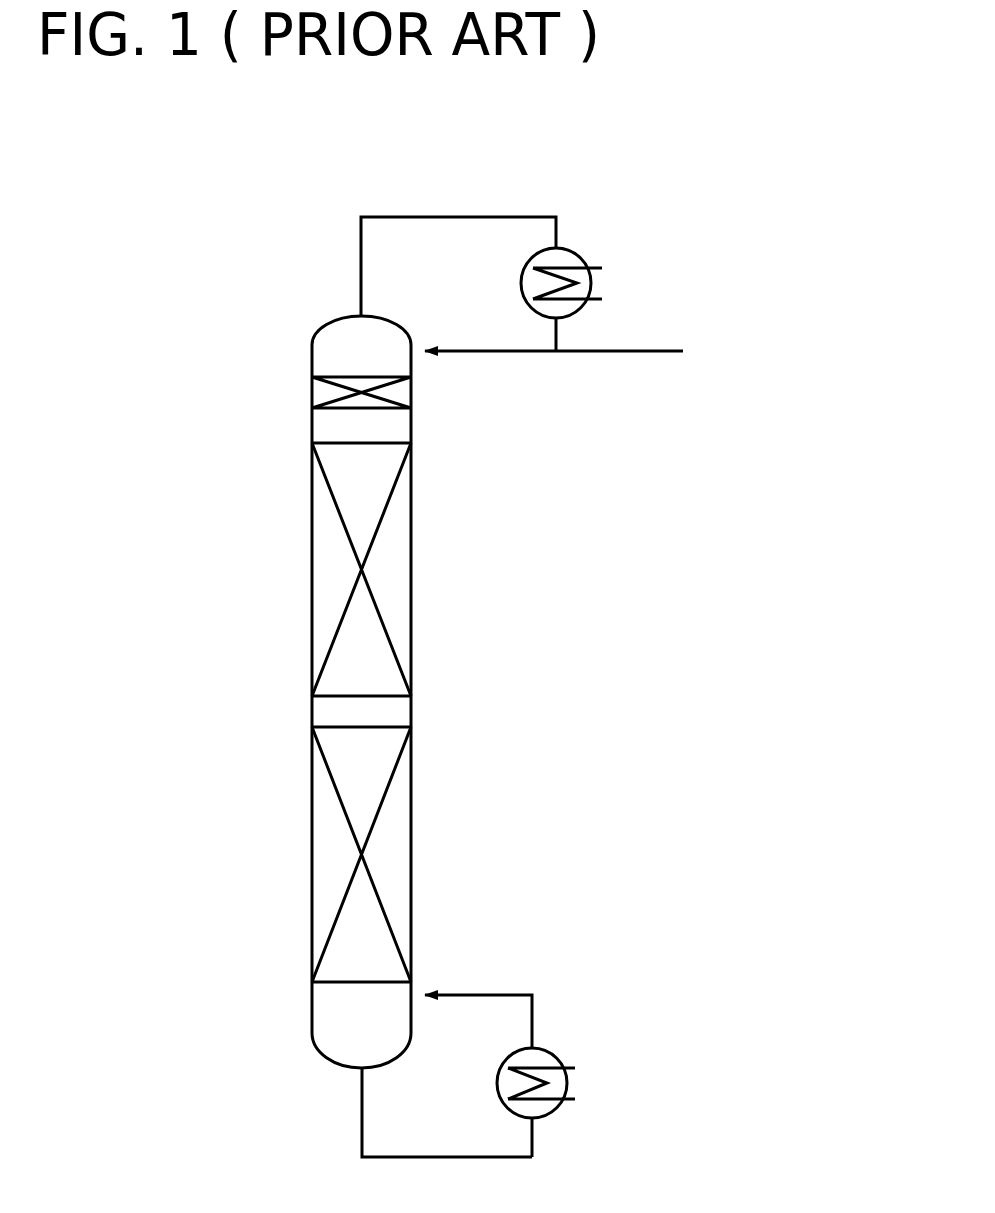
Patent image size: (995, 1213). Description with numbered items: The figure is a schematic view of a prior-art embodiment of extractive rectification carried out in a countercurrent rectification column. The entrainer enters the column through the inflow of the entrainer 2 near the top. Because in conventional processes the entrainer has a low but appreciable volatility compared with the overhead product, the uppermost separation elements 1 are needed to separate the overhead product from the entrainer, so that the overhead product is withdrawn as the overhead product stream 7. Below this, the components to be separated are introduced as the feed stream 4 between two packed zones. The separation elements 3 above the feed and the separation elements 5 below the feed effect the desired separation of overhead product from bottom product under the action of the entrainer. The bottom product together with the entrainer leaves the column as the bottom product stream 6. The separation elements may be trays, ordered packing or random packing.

The separation elements 1 is at (405, 392).
The inflow of the entrainer 2 is at (310, 427).
The separation elements 3 is at (385, 522).
The feed stream 4 is at (310, 714).
The separation elements 5 is at (398, 840).
The bottom product stream 6 is at (532, 1157).
The overhead product stream 7 is at (556, 351).